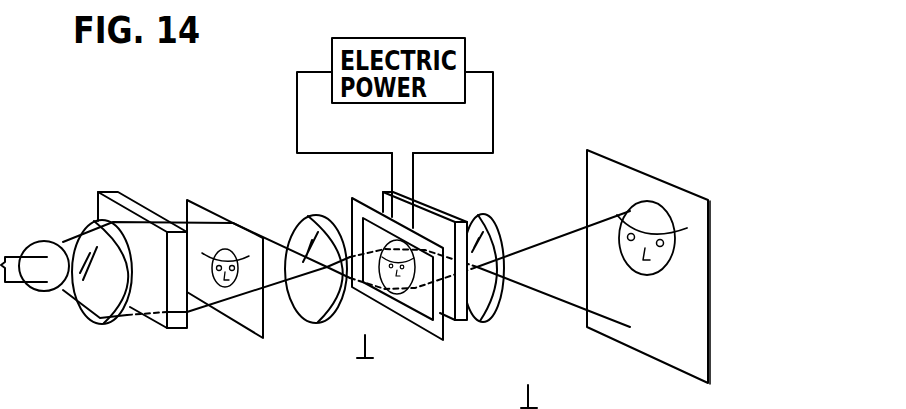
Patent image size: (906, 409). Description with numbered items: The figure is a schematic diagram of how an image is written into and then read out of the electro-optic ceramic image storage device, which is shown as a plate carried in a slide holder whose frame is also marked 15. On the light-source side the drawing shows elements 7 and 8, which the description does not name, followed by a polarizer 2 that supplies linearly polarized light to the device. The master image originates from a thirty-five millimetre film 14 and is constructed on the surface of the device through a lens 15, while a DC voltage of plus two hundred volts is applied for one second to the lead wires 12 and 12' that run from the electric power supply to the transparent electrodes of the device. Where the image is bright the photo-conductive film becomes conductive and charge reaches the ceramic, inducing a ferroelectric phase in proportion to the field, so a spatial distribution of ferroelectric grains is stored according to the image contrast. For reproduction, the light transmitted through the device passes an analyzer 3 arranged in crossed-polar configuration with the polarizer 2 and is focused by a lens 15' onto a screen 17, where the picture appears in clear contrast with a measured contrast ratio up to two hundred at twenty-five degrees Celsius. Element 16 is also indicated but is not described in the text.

The polarizer 2 is at (133, 202).
The analyzer 3 is at (438, 207).
The lamp 7 is at (28, 220).
The condenser lens 8 is at (88, 215).
The lead wire 12 is at (434, 174).
The lead wire 12' is at (374, 168).
The 35 mm film 14 is at (208, 200).
The lens 15 is at (364, 252).
The lens 15' is at (502, 256).
The optical system 16 is at (427, 408).
The screen 17 is at (642, 170).